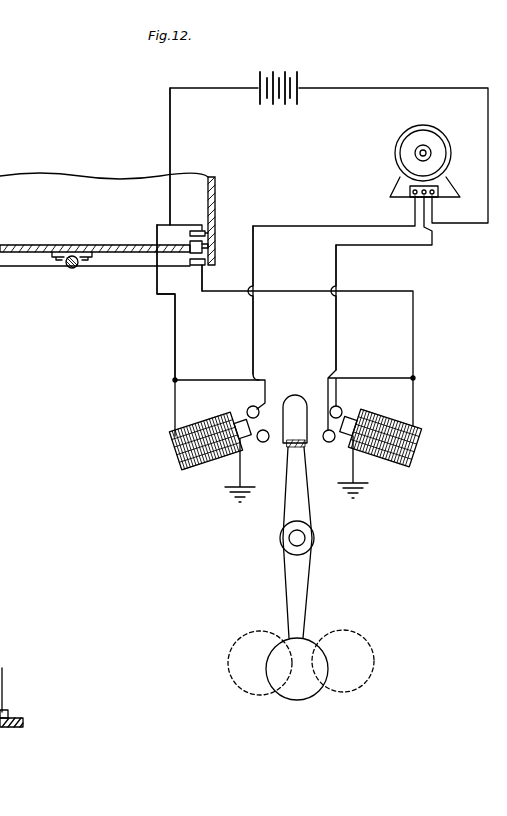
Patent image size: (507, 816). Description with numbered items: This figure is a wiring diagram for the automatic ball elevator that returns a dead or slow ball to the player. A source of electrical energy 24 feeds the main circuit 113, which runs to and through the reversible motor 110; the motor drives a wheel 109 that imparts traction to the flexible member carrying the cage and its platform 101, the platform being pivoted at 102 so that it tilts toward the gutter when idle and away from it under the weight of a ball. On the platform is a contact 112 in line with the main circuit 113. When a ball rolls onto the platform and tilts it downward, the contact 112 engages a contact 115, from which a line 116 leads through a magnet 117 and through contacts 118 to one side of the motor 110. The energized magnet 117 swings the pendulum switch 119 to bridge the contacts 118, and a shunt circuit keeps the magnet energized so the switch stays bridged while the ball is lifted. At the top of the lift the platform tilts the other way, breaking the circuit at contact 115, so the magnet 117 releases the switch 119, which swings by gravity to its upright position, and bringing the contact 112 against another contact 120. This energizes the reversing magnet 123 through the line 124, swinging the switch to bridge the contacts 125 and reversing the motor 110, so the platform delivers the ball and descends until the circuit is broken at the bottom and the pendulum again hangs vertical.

The source of electrical energy 24 is at (274, 72).
The platform 101 is at (73, 245).
The pivot 102 is at (68, 268).
The wheel 109 is at (4, 673).
The reversible motor 110 is at (417, 136).
The contact 112 is at (203, 238).
The main circuit 113 is at (172, 131).
The contact 115 is at (203, 266).
The line 116 is at (282, 293).
The magnet 117 is at (393, 461).
The contacts 118 is at (333, 430).
The pendulum switch 119 is at (307, 567).
The contact 120 is at (200, 230).
The reversing magnet 123 is at (200, 471).
The line 124 is at (176, 317).
The contacts 125 is at (266, 430).